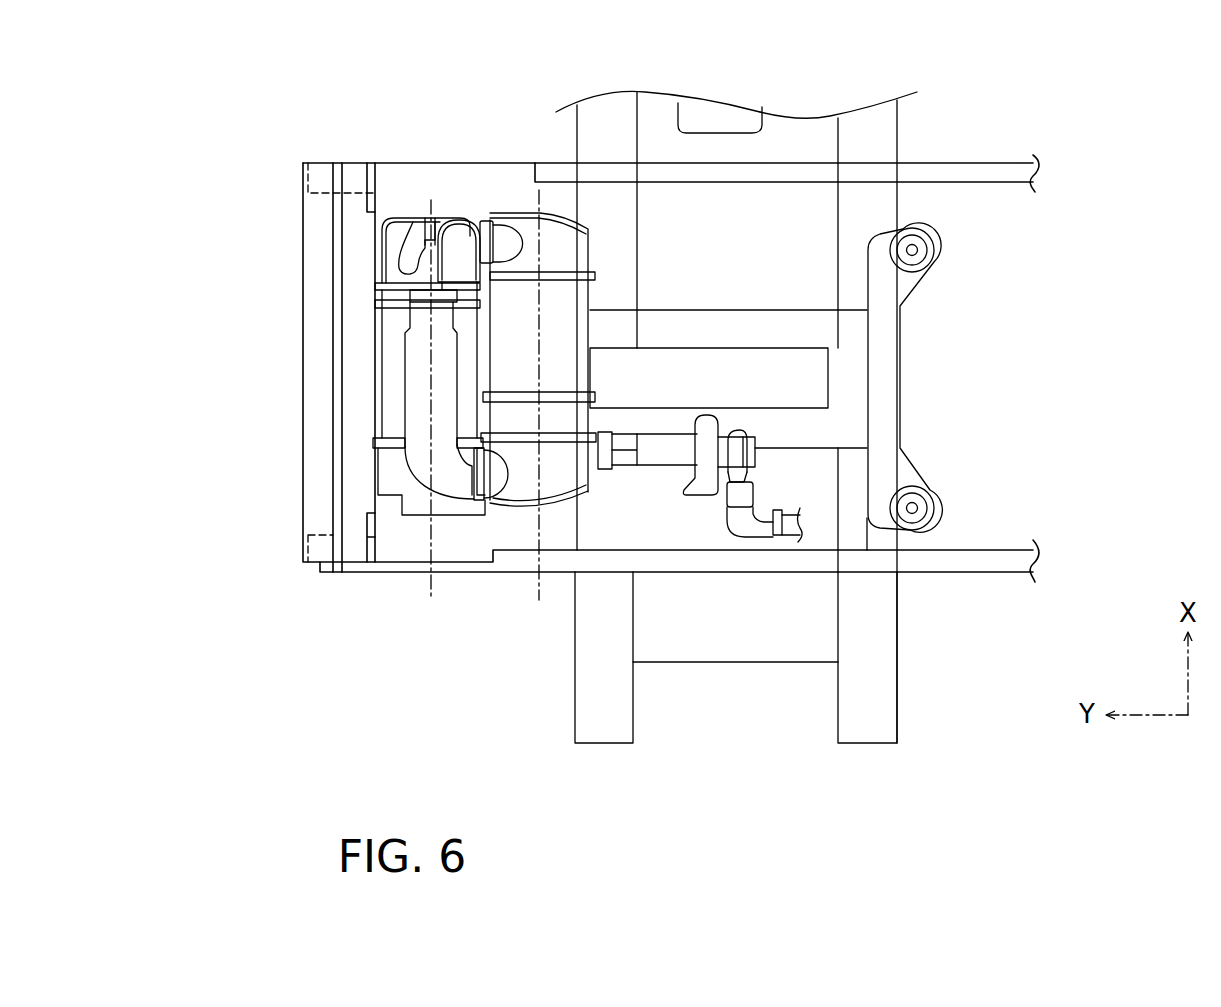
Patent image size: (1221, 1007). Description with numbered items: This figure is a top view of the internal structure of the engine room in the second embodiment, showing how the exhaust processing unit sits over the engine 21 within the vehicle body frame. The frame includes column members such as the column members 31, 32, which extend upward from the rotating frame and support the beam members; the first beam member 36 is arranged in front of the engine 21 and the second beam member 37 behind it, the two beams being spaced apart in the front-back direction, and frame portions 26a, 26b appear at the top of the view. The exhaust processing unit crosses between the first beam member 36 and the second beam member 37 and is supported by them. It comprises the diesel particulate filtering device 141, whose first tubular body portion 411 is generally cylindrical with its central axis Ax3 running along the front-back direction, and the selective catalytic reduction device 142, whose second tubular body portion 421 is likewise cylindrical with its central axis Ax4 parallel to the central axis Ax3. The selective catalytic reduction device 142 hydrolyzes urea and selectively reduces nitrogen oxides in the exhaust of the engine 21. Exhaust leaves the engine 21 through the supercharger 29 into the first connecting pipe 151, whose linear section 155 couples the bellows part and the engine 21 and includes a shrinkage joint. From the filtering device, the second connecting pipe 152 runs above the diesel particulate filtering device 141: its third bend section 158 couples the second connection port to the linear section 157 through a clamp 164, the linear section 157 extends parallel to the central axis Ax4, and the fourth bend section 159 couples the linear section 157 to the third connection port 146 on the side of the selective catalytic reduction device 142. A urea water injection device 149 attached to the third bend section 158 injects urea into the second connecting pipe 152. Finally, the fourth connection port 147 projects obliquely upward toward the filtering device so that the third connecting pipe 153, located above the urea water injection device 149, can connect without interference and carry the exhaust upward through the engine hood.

The engine 21 is at (810, 383).
The frame member 26a is at (870, 135).
The frame member 26b is at (603, 125).
The supercharger 29 is at (705, 480).
The column member 31 is at (318, 550).
The column member 32 is at (318, 170).
The first beam member 36 is at (720, 170).
The second beam member 37 is at (797, 563).
The diesel particulate filtering device 141 is at (372, 459).
The selective catalytic reduction device 142 is at (602, 282).
The third connection port 146 is at (490, 492).
The fourth connection port 147 is at (503, 218).
The urea water injection device 149 is at (418, 213).
The first connecting pipe 151 is at (598, 488).
The second connecting pipe 152 is at (374, 356).
The third connecting pipe 153 is at (467, 218).
The linear section 155 is at (633, 450).
The linear section 157 is at (417, 395).
The third bend section 158 is at (422, 267).
The fourth bend section 159 is at (452, 483).
The clamp 164 is at (413, 300).
The first tubular body portion 411 is at (390, 439).
The second tubular body portion 421 is at (565, 323).
The central axis Ax3 is at (425, 600).
The central axis Ax4 is at (537, 585).